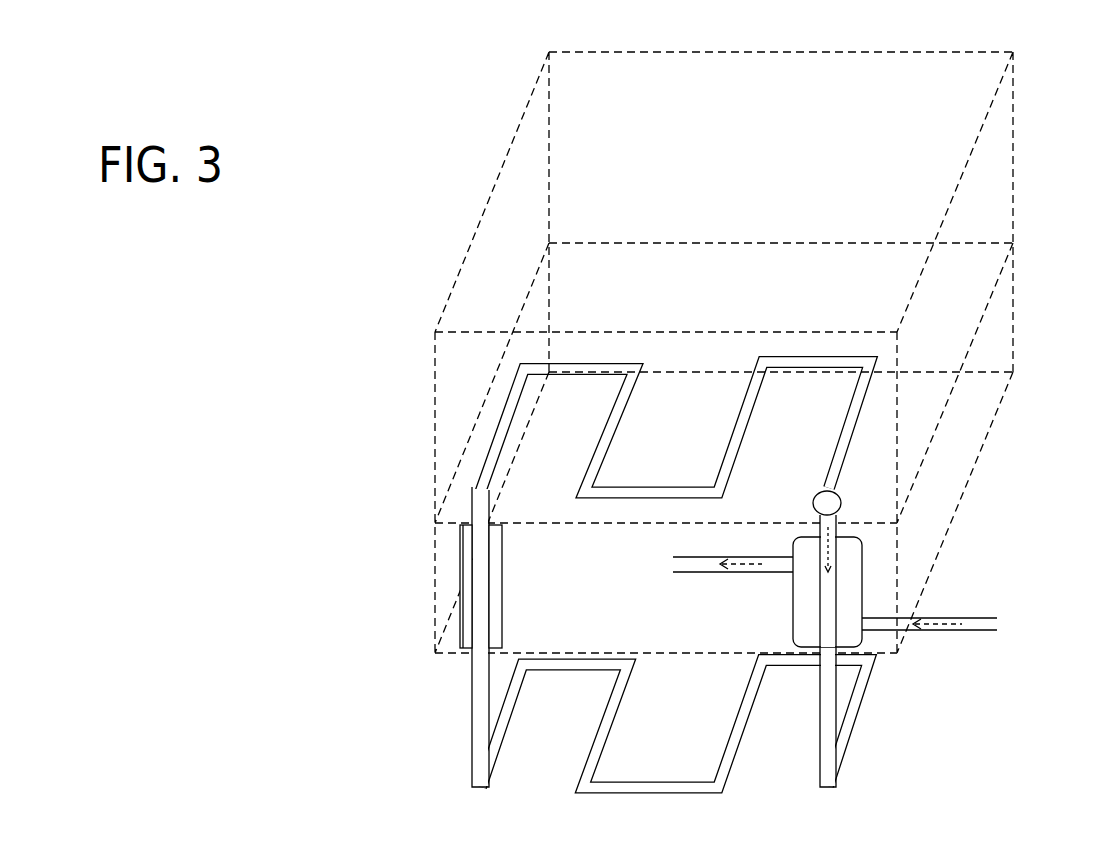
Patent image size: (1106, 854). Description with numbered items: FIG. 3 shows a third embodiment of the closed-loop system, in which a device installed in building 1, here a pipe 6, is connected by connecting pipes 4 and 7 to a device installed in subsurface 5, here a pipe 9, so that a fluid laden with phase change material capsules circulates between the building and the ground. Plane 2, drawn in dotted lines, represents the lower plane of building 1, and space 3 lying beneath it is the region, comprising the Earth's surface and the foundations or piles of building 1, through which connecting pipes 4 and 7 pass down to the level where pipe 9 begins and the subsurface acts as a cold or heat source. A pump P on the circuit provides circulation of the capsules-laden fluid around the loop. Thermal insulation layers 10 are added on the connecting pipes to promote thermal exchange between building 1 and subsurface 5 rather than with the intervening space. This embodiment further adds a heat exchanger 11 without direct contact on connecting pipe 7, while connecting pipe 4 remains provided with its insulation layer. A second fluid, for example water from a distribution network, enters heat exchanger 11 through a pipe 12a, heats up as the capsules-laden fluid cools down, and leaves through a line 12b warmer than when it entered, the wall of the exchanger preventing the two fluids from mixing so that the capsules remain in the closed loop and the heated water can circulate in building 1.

The building 1 is at (470, 378).
The plane 2 is at (462, 518).
The space 3 is at (560, 588).
The connecting pipe 4 is at (467, 637).
The subsurface 5 is at (538, 727).
The pipe 6 is at (853, 435).
The connecting pipe 7 is at (832, 612).
The pipe 9 is at (855, 722).
The thermal insulation layer 10 is at (460, 600).
The heat exchanger 11 is at (865, 555).
The pipe 12a is at (948, 612).
The line 12b is at (732, 573).
The pump P is at (842, 503).